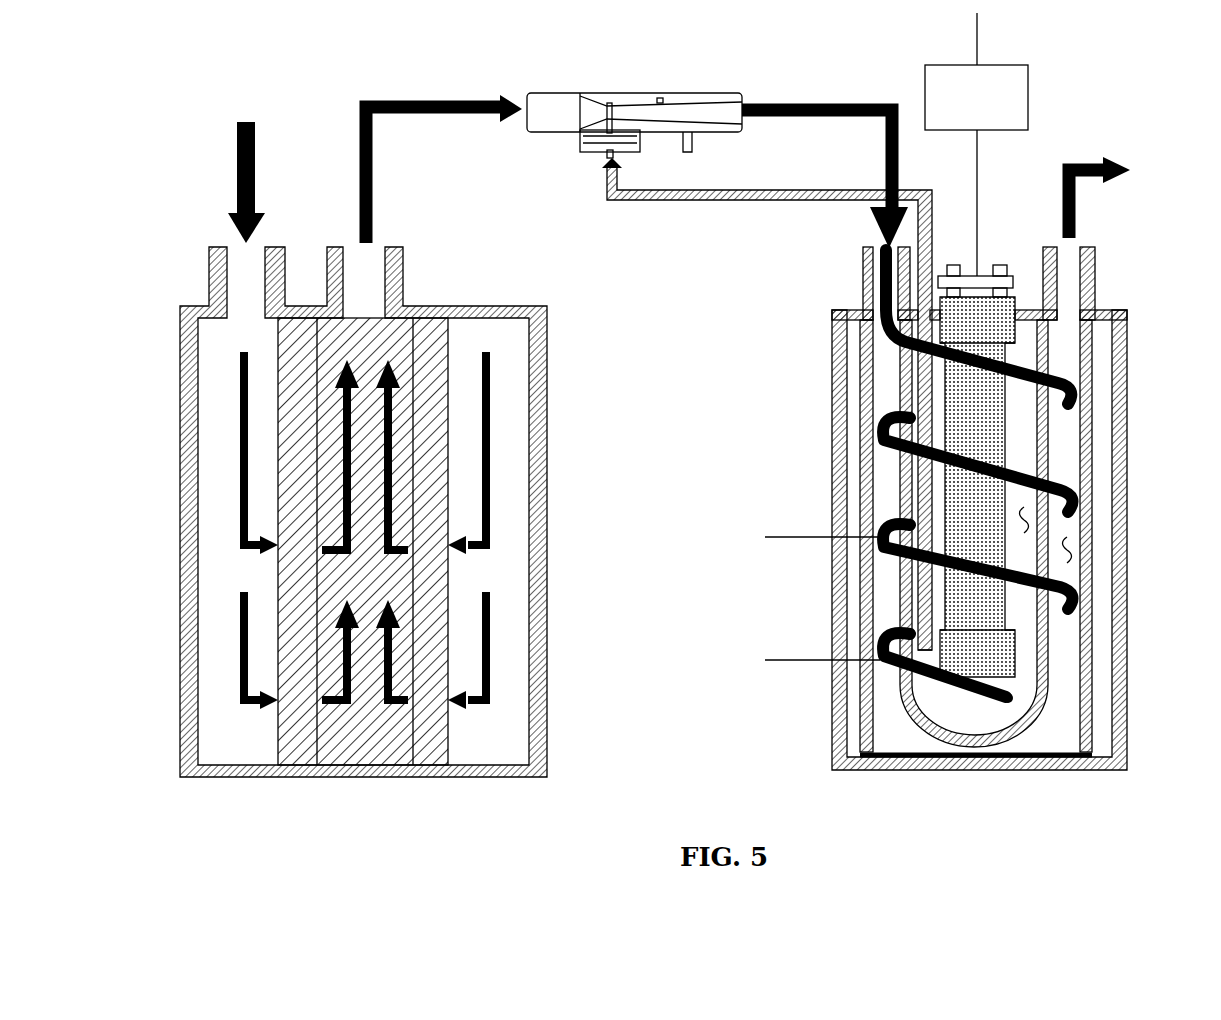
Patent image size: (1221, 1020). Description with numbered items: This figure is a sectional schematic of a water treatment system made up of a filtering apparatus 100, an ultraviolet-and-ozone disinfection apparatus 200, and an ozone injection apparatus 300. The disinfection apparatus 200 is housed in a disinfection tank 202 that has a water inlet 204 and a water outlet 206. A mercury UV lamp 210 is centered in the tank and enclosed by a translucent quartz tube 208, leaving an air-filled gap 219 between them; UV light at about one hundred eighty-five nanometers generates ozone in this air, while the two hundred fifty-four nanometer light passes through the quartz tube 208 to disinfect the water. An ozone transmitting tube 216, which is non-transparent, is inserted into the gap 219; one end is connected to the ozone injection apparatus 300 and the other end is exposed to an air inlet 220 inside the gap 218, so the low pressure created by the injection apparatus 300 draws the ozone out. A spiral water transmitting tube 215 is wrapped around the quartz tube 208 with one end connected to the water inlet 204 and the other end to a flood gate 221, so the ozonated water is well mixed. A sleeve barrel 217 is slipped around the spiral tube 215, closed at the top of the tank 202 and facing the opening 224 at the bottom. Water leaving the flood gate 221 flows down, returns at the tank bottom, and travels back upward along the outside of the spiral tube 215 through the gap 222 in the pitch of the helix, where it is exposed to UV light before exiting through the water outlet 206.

The filtering apparatus 100 is at (530, 290).
The ultraviolet-and-ozone disinfection apparatus 200 is at (1208, 120).
The ozone injection apparatus 300 is at (675, 68).
The disinfection tank 202 is at (831, 378).
The water inlet 204 is at (814, 271).
The water outlet 206 is at (1130, 271).
The quartz tube 208 is at (1050, 335).
The mercury UV lamp 210 is at (1008, 450).
The spiral water transmitting tube 215 is at (885, 345).
The ozone transmitting tube 216 is at (933, 201).
The sleeve barrel 217 is at (1094, 677).
The gap 218 is at (1068, 548).
The gap 219 is at (1025, 520).
The air inlet 220 is at (825, 682).
The flood gate 221 is at (1017, 706).
The gap in the pitch of the helix 222 is at (794, 537).
The opening 224 is at (979, 780).